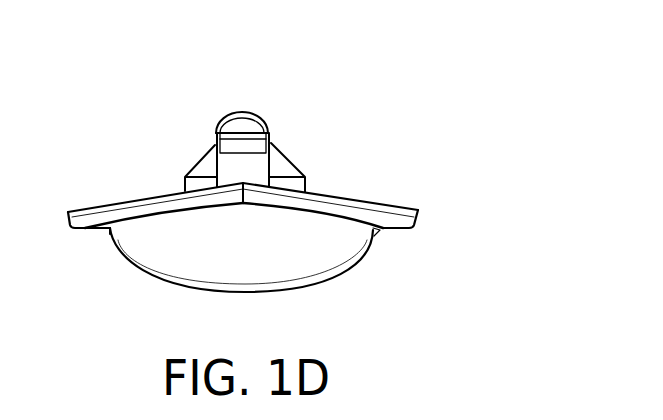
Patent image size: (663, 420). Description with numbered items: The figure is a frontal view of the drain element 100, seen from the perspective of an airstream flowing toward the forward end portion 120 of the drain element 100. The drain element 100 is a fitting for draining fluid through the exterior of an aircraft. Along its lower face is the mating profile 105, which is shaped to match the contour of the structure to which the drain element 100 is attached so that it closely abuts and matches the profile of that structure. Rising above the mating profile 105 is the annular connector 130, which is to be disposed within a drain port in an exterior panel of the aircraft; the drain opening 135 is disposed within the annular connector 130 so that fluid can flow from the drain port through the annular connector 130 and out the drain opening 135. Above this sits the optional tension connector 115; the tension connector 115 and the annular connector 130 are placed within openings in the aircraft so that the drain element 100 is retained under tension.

The drain element 100 is at (140, 96).
The mating profile 105 is at (408, 208).
The tension connector 115 is at (247, 115).
The forward end portion 120 is at (340, 257).
The annular connector 130 is at (290, 153).
The drain opening 135 is at (241, 170).